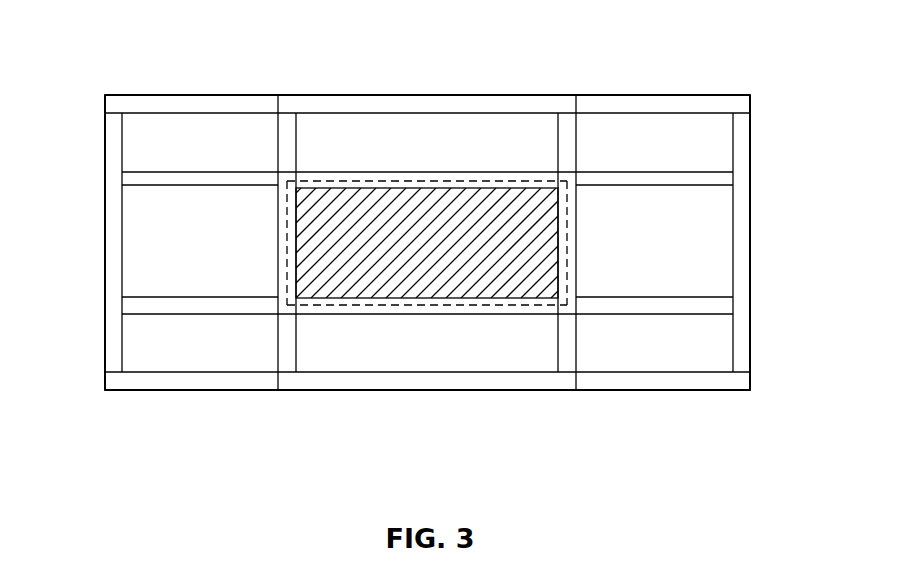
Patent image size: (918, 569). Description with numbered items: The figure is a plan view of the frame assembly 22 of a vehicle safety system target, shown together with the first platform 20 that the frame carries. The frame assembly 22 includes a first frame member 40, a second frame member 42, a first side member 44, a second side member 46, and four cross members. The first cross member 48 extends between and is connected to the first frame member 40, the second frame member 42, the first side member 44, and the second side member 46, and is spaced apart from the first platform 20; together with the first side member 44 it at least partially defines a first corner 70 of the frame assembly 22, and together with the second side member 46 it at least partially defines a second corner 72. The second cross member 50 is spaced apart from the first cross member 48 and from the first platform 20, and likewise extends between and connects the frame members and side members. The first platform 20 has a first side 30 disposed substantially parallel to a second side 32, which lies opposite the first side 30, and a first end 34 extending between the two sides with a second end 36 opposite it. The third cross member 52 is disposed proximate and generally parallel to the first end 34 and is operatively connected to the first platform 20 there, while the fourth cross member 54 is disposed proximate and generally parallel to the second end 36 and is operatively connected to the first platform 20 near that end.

The first platform 20 is at (424, 253).
The frame assembly 22 is at (610, 428).
The first side 30 is at (412, 308).
The second side 32 is at (412, 178).
The first end 34 is at (569, 256).
The second end 36 is at (286, 256).
The first frame member 40 is at (668, 322).
The second frame member 42 is at (666, 166).
The first side member 44 is at (639, 398).
The second side member 46 is at (637, 93).
The first cross member 48 is at (756, 266).
The second cross member 50 is at (101, 251).
The third cross member 52 is at (581, 147).
The fourth cross member 54 is at (275, 147).
The first corner 70 is at (742, 383).
The second corner 72 is at (740, 107).